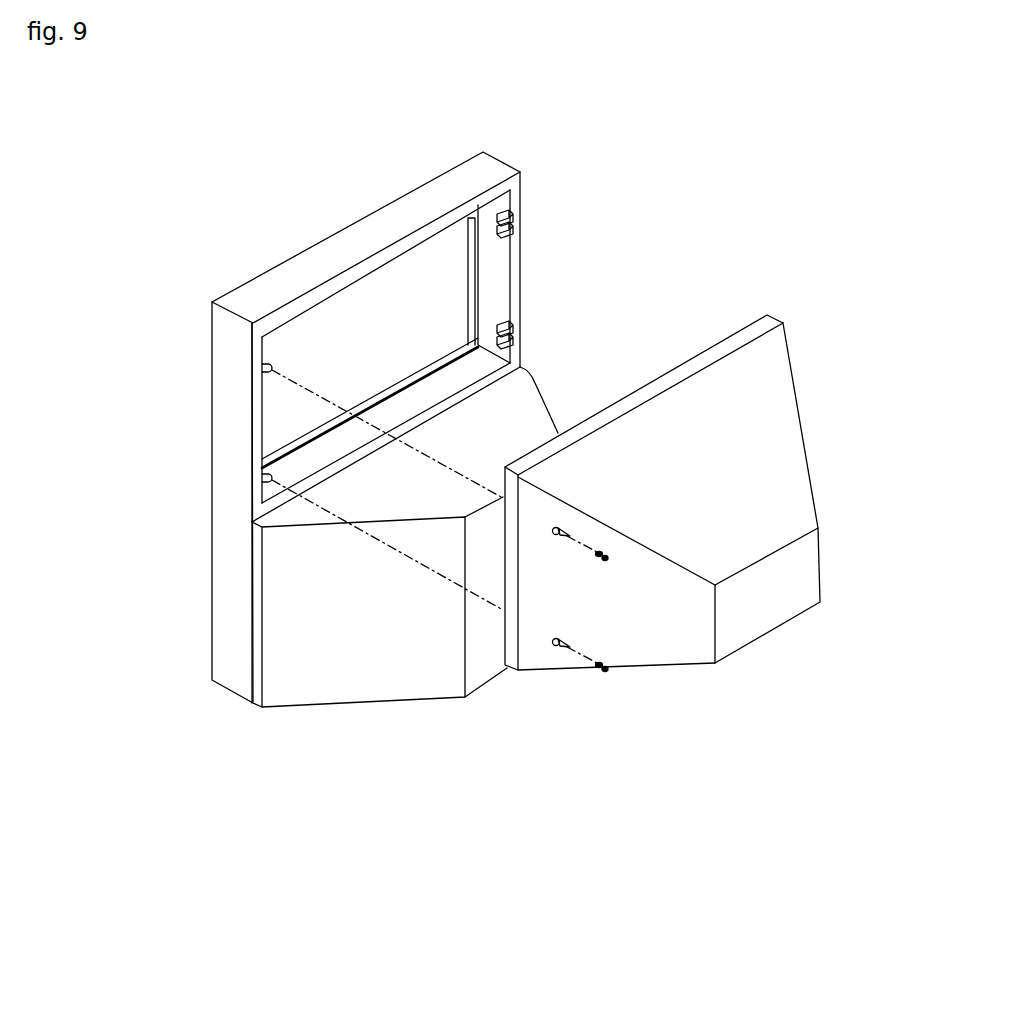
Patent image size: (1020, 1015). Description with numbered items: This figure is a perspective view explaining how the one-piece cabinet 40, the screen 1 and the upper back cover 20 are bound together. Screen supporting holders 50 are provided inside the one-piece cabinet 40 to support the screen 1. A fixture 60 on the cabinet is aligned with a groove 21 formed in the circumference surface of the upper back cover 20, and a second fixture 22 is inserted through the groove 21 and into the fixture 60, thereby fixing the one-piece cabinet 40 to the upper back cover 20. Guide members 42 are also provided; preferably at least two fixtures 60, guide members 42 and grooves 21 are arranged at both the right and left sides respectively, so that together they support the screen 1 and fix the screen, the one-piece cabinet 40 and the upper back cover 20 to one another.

The screen 1 is at (293, 340).
The upper back cover 20 is at (777, 407).
The groove 21 is at (556, 534).
The second fixture 22 is at (603, 560).
The one-piece cabinet 40 is at (222, 354).
The guide member 42 is at (507, 213).
The screen supporting holder 50 is at (472, 273).
The fixture 60 is at (512, 230).